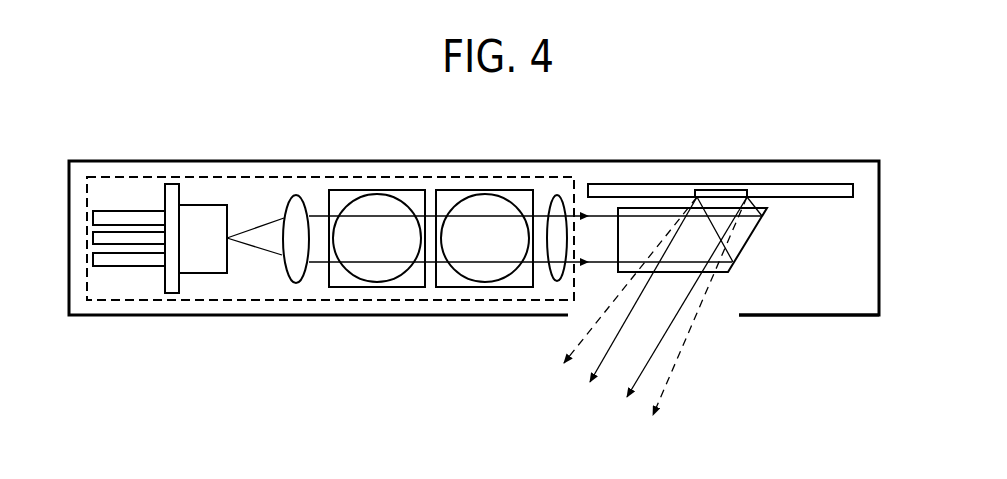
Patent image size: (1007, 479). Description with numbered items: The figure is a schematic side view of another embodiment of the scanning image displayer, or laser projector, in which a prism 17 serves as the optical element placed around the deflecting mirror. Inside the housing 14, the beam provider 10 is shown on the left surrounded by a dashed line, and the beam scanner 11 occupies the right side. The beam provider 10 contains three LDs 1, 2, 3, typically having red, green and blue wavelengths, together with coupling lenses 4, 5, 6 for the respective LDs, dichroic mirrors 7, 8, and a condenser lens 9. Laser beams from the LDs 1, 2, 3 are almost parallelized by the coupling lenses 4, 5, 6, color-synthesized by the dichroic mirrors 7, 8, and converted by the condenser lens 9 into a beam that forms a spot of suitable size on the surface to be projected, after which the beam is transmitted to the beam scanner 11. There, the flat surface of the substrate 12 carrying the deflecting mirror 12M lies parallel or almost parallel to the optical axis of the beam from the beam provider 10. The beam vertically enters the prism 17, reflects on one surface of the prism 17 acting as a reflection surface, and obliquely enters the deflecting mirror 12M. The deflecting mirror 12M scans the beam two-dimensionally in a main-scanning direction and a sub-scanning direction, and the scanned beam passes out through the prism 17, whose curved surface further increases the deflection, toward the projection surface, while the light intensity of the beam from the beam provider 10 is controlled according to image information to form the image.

The LD 1 is at (203, 275).
The LD 2 is at (377, 202).
The LD 3 is at (485, 202).
The coupling lens 4 is at (290, 283).
The coupling lens 5 is at (378, 195).
The coupling lens 6 is at (482, 195).
The dichroic mirror 7 is at (350, 288).
The dichroic mirror 8 is at (455, 288).
The condenser lens 9 is at (557, 197).
The beam provider 10 is at (270, 177).
The beam scanner 11 is at (833, 225).
The substrate 12 is at (808, 184).
The deflecting mirror 12M is at (718, 188).
The housing 14 is at (775, 317).
The prism 17 is at (750, 242).